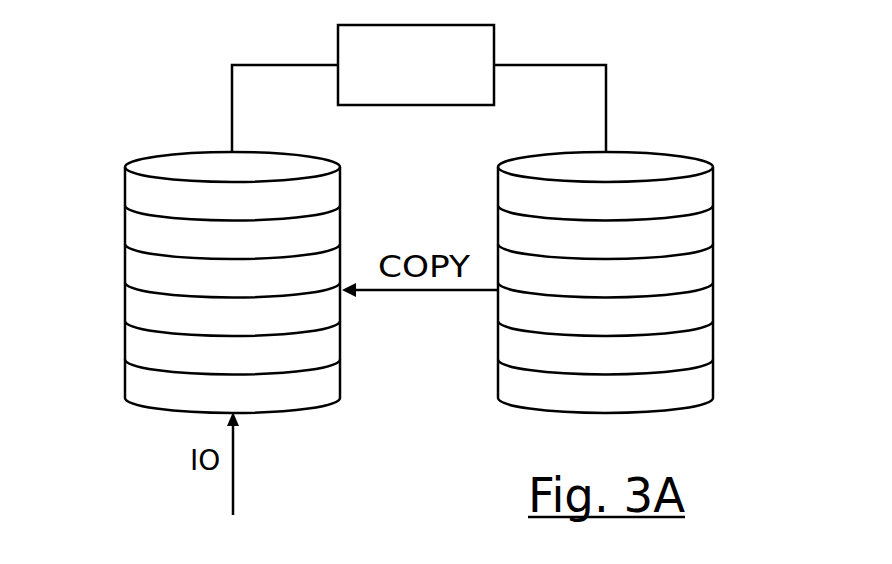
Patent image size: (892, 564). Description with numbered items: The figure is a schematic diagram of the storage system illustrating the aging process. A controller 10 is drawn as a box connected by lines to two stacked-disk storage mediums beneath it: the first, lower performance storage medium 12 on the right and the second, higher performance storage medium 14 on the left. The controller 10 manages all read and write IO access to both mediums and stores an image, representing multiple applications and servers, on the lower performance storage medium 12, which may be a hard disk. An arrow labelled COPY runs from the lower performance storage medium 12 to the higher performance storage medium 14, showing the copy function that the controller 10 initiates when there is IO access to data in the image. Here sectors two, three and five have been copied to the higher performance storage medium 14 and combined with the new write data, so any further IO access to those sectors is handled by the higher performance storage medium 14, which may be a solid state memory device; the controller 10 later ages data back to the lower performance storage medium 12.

The controller 10 is at (494, 41).
The first, lower performance storage medium 12 is at (713, 228).
The second, higher performance storage medium 14 is at (125, 243).